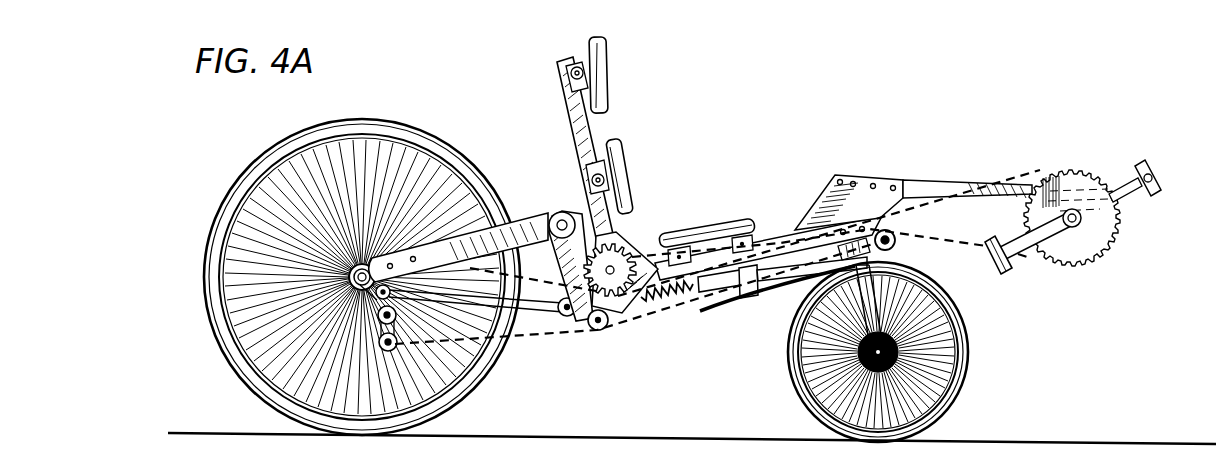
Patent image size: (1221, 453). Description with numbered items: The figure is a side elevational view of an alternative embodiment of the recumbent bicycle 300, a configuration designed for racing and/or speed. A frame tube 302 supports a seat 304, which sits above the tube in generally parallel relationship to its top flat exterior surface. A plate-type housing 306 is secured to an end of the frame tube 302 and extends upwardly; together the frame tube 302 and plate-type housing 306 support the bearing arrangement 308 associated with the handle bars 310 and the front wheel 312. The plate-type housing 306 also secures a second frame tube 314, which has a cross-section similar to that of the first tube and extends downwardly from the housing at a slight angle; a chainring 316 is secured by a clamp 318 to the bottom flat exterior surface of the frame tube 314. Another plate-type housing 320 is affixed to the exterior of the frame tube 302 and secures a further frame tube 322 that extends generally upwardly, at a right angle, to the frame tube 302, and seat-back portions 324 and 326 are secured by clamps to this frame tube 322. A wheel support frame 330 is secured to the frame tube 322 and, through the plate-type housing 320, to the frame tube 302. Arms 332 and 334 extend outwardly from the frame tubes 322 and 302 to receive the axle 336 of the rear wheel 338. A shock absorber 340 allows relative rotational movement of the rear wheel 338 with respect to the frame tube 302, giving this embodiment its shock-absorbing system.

The recumbent bicycle 300 is at (1028, 148).
The frame tube 302 is at (780, 230).
The seat 304 is at (727, 224).
The plate-type housing 306 is at (860, 180).
The bearing arrangement 308 is at (892, 248).
The handle bars 310 is at (803, 277).
The front wheel 312 is at (970, 357).
The frame tube 314 is at (920, 180).
The chainring 316 is at (1095, 248).
The clamp 318 is at (1090, 213).
The plate-type housing 320 is at (625, 243).
The frame tube 322 is at (592, 127).
The seat-back portion 324 is at (627, 148).
The seat-back portion 326 is at (605, 73).
The wheel support frame 330 is at (500, 228).
The arm 332 is at (488, 192).
The arm 334 is at (538, 310).
The axle 336 is at (250, 197).
The rear wheel 338 is at (470, 155).
The shock absorber 340 is at (650, 296).